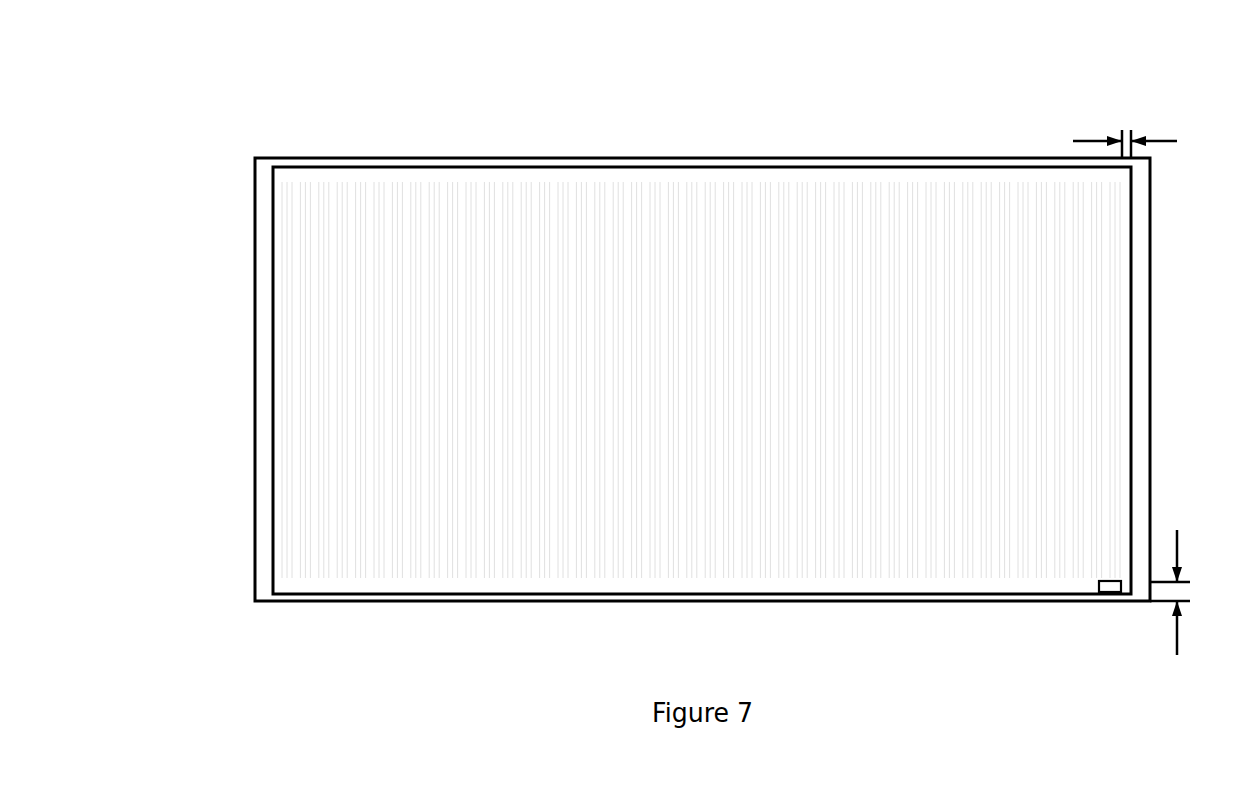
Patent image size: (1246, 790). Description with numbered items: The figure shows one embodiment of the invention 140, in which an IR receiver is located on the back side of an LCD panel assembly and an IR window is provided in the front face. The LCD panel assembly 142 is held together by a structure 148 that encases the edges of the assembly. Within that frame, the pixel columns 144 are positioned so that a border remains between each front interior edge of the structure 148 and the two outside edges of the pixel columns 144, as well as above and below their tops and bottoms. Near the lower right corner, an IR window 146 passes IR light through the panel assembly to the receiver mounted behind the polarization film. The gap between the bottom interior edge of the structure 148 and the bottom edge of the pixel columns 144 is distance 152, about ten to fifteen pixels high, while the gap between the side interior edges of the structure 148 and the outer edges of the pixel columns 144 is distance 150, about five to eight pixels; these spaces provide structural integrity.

The embodiment of the invention 140 is at (655, 106).
The LCD panel assembly 142 is at (318, 361).
The pixel columns 144 is at (897, 181).
The IR window 146 is at (1108, 597).
The structure 148 is at (365, 157).
The distance 150 is at (1150, 139).
The distance 152 is at (1175, 609).